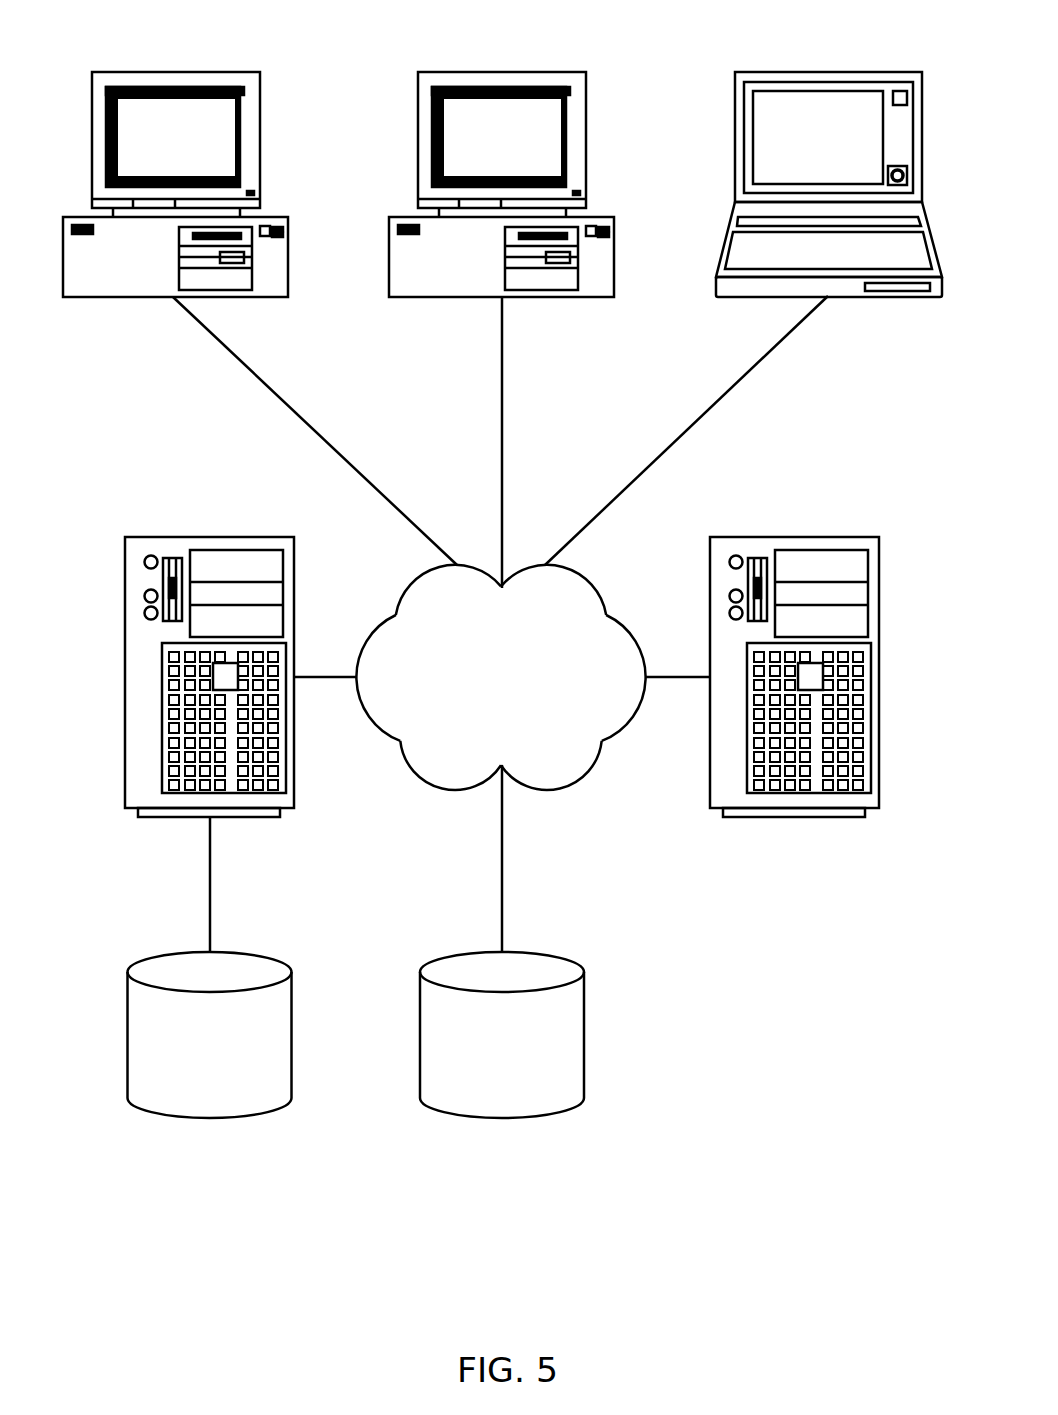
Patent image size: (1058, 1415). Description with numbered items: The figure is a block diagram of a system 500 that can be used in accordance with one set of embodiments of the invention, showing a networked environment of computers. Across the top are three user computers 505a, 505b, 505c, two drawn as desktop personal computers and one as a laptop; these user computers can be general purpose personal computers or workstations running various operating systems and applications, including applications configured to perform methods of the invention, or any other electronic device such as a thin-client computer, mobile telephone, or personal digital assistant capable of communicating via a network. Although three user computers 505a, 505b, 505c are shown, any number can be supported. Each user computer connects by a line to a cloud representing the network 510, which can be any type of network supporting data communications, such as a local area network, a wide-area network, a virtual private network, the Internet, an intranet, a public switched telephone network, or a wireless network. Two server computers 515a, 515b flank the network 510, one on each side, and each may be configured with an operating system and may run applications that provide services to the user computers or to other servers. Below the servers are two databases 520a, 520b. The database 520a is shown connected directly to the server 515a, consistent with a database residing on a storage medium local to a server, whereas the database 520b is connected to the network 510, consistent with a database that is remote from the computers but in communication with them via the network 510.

The system 500 is at (502, 621).
The user computer 505a is at (289, 238).
The user computer 505b is at (389, 240).
The user computer 505c is at (733, 185).
The network 510 is at (543, 790).
The server computer 515a is at (125, 678).
The server computer 515b is at (879, 676).
The database 520a is at (208, 1120).
The database 520b is at (500, 1120).